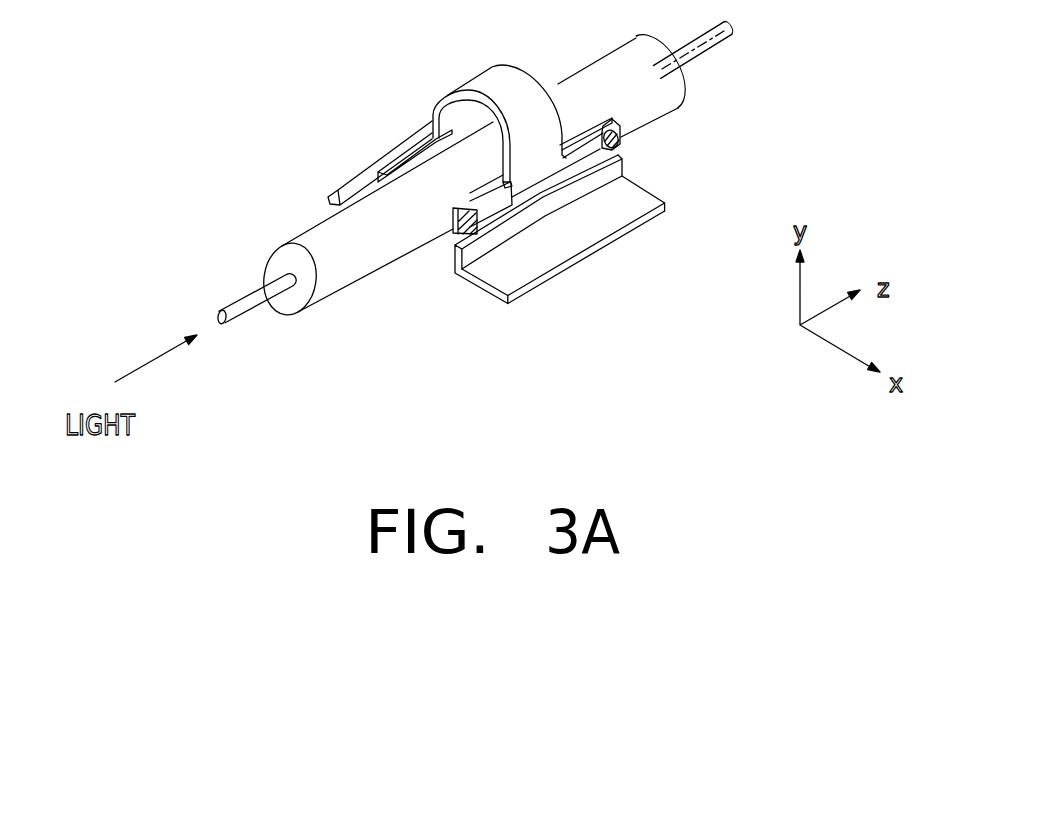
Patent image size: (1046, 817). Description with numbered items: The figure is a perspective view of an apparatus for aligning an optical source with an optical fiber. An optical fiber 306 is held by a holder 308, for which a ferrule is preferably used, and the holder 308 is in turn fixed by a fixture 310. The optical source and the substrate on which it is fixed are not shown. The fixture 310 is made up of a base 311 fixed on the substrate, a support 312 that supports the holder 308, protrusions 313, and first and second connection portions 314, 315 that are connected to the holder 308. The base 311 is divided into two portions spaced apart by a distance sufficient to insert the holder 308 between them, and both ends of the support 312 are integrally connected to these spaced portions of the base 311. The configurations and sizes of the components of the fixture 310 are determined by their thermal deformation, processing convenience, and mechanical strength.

The optical fiber 306 is at (230, 311).
The holder 308 is at (304, 311).
The fixture 310 is at (455, 80).
The base 311 is at (340, 193).
The support 312 is at (516, 78).
The protrusions 313 is at (622, 158).
The first connection portion 314 is at (452, 236).
The second connection portion 315 is at (622, 133).